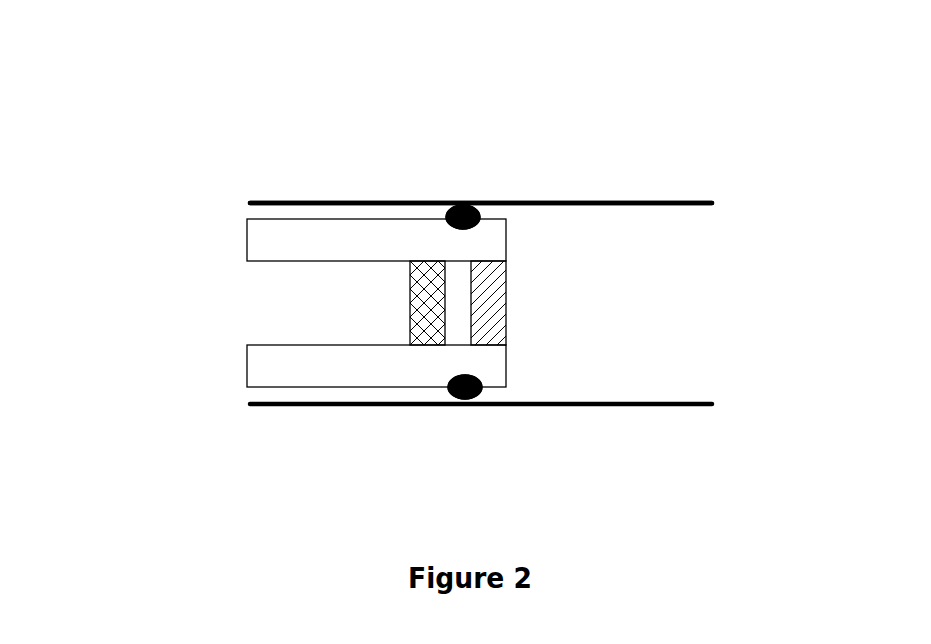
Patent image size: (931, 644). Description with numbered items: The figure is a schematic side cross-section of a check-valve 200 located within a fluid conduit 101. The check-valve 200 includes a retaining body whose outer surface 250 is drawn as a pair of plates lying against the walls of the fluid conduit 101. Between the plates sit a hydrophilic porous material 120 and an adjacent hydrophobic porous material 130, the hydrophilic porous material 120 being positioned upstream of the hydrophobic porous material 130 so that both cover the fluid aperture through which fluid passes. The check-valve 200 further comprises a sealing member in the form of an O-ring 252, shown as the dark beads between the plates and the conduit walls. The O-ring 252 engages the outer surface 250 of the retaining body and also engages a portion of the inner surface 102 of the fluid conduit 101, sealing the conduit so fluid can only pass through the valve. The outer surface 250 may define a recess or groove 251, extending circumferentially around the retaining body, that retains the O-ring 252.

The fluid conduit 101 is at (537, 188).
The inner surface 102 is at (523, 200).
The hydrophilic porous material 120 is at (490, 348).
The hydrophobic porous material 130 is at (423, 348).
The check-valve 200 is at (346, 359).
The outer surface 250 is at (305, 218).
The recess or groove 251 is at (466, 385).
The O-ring 252 is at (445, 213).